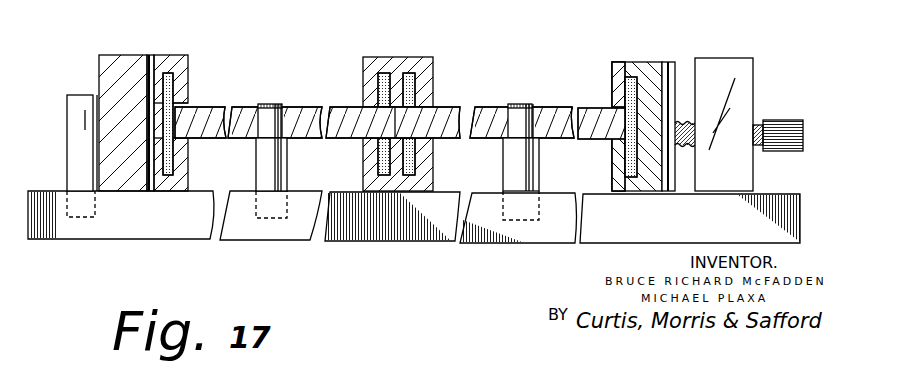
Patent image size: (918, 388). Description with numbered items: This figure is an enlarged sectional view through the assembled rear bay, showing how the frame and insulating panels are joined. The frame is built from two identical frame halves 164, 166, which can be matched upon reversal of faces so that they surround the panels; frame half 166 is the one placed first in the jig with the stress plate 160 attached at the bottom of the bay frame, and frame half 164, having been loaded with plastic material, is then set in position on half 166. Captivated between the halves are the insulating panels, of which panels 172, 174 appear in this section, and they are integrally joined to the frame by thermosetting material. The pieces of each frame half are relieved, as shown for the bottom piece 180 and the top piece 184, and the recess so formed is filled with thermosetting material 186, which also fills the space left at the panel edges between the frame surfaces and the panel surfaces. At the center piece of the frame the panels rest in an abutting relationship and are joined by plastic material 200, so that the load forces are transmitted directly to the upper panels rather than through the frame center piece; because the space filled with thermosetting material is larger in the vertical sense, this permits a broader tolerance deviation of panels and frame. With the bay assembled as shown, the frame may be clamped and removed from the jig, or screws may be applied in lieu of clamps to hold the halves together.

The stress plate 160 is at (99, 64).
The frame half 164 is at (188, 55).
The frame half 166 is at (175, 183).
The insulating panel 172 is at (300, 107).
The insulating panel 174 is at (541, 140).
The bottom piece 180 is at (168, 62).
The top piece 184 is at (637, 62).
The thermosetting material 186 is at (190, 106).
The plastic material 200 is at (432, 108).